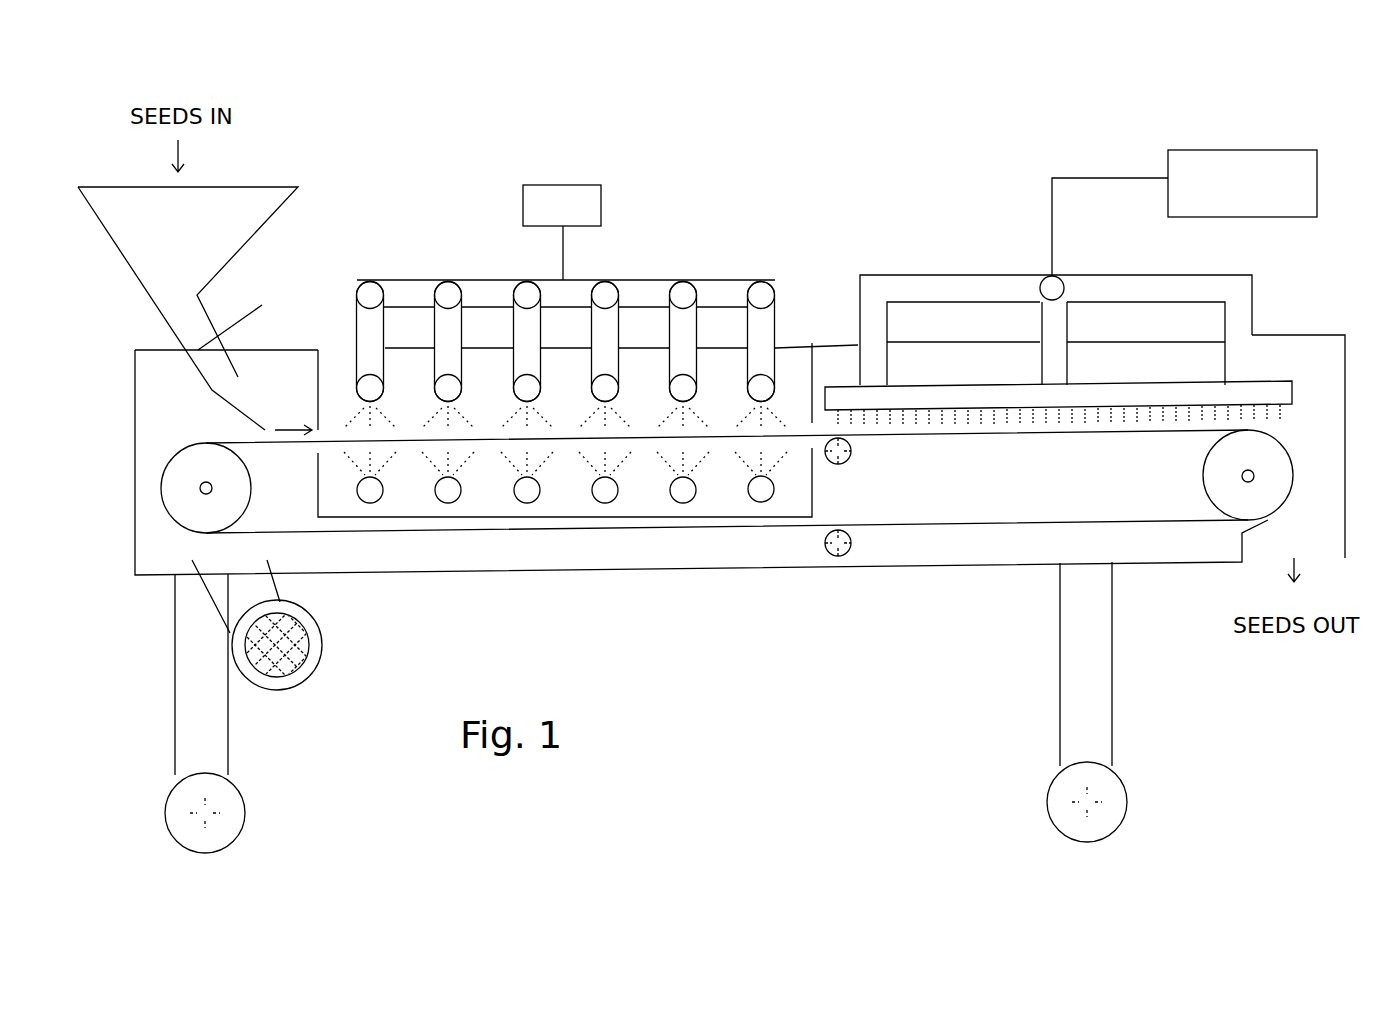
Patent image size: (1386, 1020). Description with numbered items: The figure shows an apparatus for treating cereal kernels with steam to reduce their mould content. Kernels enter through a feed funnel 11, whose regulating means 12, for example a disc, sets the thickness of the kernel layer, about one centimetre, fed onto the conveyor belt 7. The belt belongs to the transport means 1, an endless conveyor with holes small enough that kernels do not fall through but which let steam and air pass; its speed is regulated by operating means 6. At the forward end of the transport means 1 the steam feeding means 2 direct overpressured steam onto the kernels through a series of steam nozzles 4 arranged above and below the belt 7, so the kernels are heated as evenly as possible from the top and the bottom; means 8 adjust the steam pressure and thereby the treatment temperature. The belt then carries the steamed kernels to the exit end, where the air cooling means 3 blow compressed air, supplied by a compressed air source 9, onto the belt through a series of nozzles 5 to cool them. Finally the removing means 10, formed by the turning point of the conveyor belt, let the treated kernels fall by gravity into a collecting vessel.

The transport means 1 is at (184, 432).
The steam feeding means 2 is at (543, 405).
The air cooling means 3 is at (979, 250).
The steam nozzle 4 is at (366, 379).
The nozzle 5 is at (1294, 414).
The operating means 6 is at (333, 655).
The conveyor belt 7 is at (344, 432).
The means to adjust the steam pressure 8 is at (585, 182).
The compressed air source 9 is at (1258, 144).
The removing means 10 is at (1306, 471).
The feed funnel 11 is at (299, 190).
The regulating means 12 is at (269, 301).